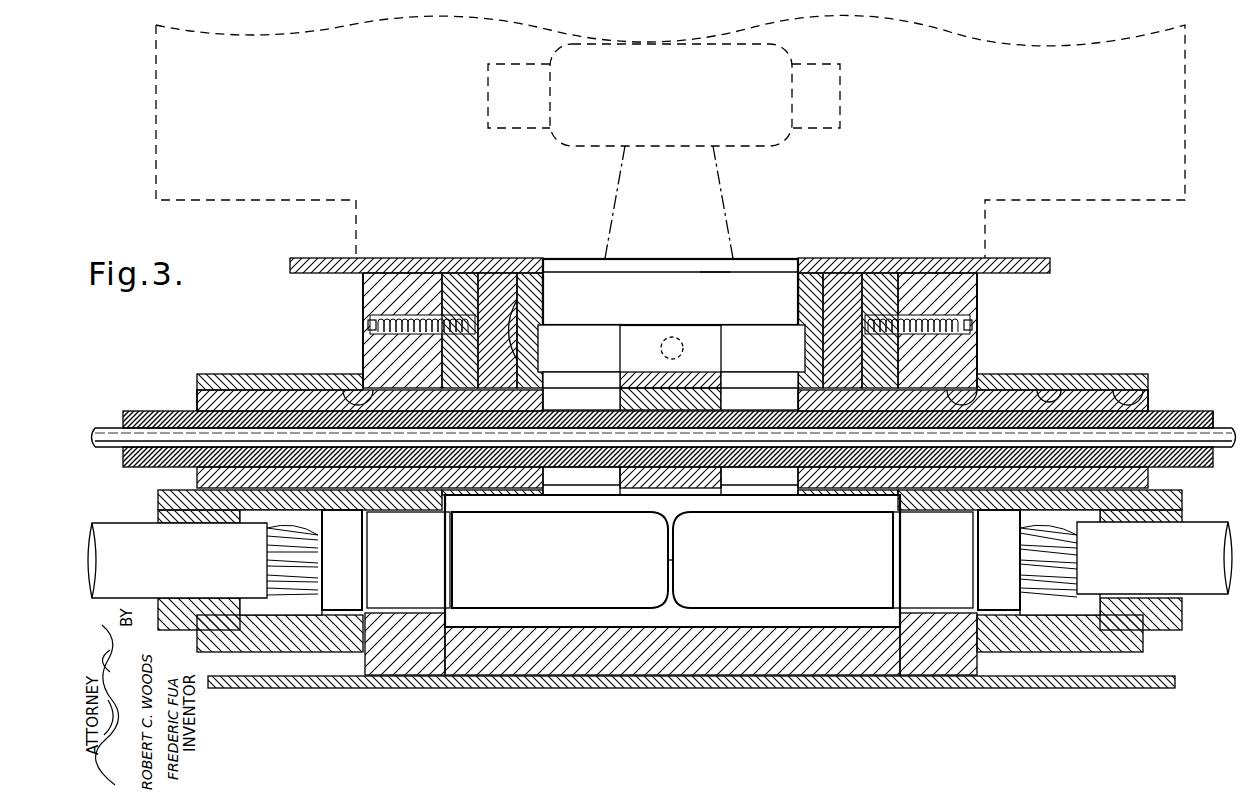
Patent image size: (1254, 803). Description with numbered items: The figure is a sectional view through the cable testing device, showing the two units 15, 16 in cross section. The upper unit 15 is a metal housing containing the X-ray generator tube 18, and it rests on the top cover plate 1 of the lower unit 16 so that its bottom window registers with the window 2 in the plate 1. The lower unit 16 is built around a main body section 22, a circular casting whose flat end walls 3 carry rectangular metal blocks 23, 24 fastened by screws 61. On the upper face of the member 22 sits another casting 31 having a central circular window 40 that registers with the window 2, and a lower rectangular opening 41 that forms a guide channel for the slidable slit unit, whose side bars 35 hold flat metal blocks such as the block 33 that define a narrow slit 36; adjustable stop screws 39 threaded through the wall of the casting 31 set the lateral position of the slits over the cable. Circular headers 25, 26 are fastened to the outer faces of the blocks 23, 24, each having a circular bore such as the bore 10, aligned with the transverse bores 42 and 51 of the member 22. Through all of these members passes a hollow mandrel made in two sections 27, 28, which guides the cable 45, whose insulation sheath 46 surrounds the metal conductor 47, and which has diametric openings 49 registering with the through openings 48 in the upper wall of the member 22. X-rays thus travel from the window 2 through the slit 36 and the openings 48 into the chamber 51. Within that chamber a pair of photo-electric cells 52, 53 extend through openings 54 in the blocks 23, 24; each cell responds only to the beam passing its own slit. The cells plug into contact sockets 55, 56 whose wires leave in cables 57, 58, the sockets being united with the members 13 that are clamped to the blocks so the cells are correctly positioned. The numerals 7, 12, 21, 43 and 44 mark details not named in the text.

The top cover plate 1 is at (998, 258).
The window 2 is at (290, 272).
The flat end walls 3 is at (447, 275).
The center housing top 7 is at (716, 272).
The circular bore 10 is at (283, 600).
The gap 12 is at (608, 364).
The members 13 is at (208, 648).
The unit 15 is at (1187, 75).
The unit 16 is at (990, 296).
The X-ray generator tube 18 is at (780, 128).
The bottom plate 21 is at (600, 680).
The main body section 22 is at (830, 652).
The rectangular metal block 23 is at (368, 338).
The rectangular metal block 24 is at (978, 340).
The circular header 25 is at (253, 374).
The circular header 26 is at (1090, 374).
The mandrel section 27 is at (290, 395).
The mandrel section 28 is at (1045, 395).
The casting 31 is at (474, 275).
The flat metal block 33 is at (705, 322).
The side bars 35 is at (527, 330).
The slit 36 is at (585, 275).
The adjustable stop screws 39 is at (672, 336).
The central circular window 40 is at (660, 272).
The rectangular opening 41 is at (500, 300).
The transverse circular bore 42 is at (830, 290).
The recesses 43 is at (350, 392).
The clamp plate ends 44 is at (197, 398).
The cable 45 is at (1206, 410).
The insulation covering or sheath 46 is at (160, 411).
The metal conductor 47 is at (108, 436).
The through openings 48 is at (575, 326).
The mandrel openings 49 is at (562, 478).
The bore or chamber 51 is at (688, 612).
The photo-electric cell 52 is at (518, 585).
The photo-electric cell 53 is at (778, 585).
The openings 54 is at (410, 616).
The contact header or socket 55 is at (343, 585).
The contact header or socket 56 is at (997, 590).
The cable 57 is at (112, 530).
The cable 58 is at (1205, 592).
The screws 61 is at (370, 323).